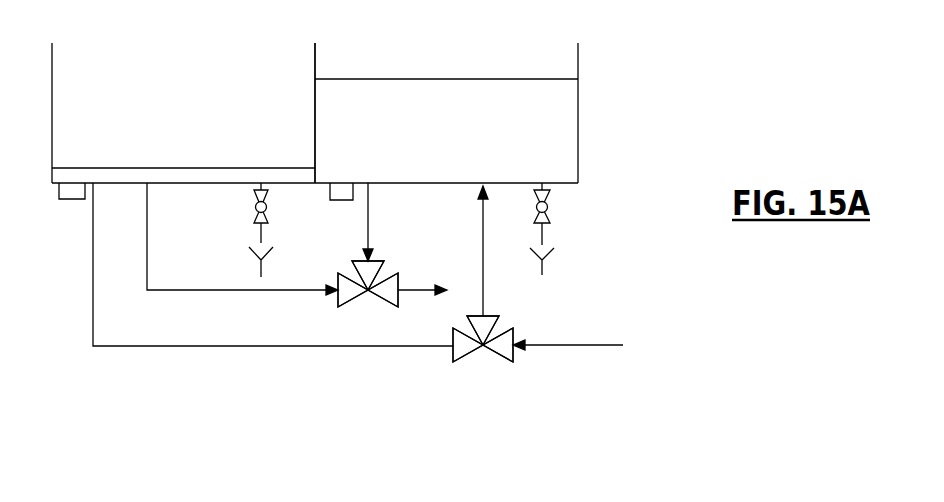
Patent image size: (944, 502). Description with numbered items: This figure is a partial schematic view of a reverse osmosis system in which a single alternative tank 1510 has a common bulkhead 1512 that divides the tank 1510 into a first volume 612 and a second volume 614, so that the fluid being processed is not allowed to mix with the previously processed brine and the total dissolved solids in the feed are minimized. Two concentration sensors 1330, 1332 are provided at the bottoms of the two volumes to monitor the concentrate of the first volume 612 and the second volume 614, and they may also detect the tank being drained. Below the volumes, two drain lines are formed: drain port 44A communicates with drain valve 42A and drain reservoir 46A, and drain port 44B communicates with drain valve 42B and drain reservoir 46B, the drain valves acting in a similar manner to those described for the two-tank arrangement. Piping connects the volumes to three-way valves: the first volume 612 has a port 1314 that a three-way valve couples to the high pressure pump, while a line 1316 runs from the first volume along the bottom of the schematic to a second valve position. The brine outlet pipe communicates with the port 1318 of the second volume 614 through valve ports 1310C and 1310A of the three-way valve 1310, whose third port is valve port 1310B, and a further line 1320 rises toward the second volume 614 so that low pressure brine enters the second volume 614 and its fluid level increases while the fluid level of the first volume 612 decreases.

The first volume 612 is at (83, 173).
The second volume 614 is at (417, 83).
The tank 1510 is at (578, 55).
The common bulkhead 1512 is at (315, 59).
The concentration sensor 1330 is at (65, 200).
The concentration sensor 1332 is at (343, 200).
The port 1314 is at (147, 249).
The conduit 1316 is at (93, 308).
The port 1318 is at (395, 218).
The conduit 1320 is at (484, 236).
The drain port 44A is at (253, 188).
The drain valve 42A is at (253, 210).
The drain reservoir 46A is at (253, 262).
The drain port 44B is at (550, 192).
The drain valve 42B is at (550, 212).
The drain reservoir 46B is at (550, 262).
The three-way valve 1310 is at (367, 297).
The valve port 1310A is at (363, 260).
The valve port 1310B is at (338, 298).
The valve port 1310C is at (390, 303).